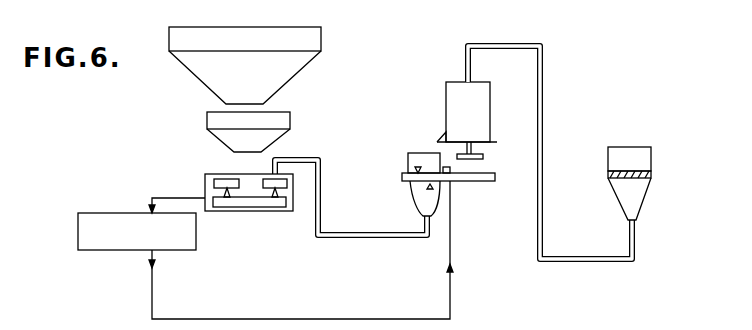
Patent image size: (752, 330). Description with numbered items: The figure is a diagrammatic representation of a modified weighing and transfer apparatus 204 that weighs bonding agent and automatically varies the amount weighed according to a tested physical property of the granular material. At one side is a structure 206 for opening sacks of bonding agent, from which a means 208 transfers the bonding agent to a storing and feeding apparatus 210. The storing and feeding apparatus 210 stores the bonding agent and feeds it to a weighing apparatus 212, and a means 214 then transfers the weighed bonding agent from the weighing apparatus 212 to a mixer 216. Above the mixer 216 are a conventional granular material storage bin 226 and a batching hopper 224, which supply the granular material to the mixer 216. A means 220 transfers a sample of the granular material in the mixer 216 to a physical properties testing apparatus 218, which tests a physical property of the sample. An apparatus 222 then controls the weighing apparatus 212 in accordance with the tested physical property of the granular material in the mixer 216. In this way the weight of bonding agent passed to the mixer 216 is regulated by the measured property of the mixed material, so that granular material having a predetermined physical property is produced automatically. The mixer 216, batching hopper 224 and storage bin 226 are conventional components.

The weighing and transfer apparatus 204 is at (165, 153).
The structure for opening sacks of bonding agent 206 is at (649, 190).
The means for transferring the bonding agent 208 is at (572, 262).
The storing and feeding apparatus 210 is at (446, 98).
The weighing apparatus 212 is at (410, 190).
The means for transferring the weighed bonding agent 214 is at (384, 238).
The mixer 216 is at (217, 212).
The physical properties testing apparatus 218 is at (78, 230).
The means for transferring a sample 220 is at (179, 197).
The apparatus for controlling the weighing apparatus 222 is at (451, 297).
The batching hopper 224 is at (290, 122).
The granular material storage bin 226 is at (301, 66).